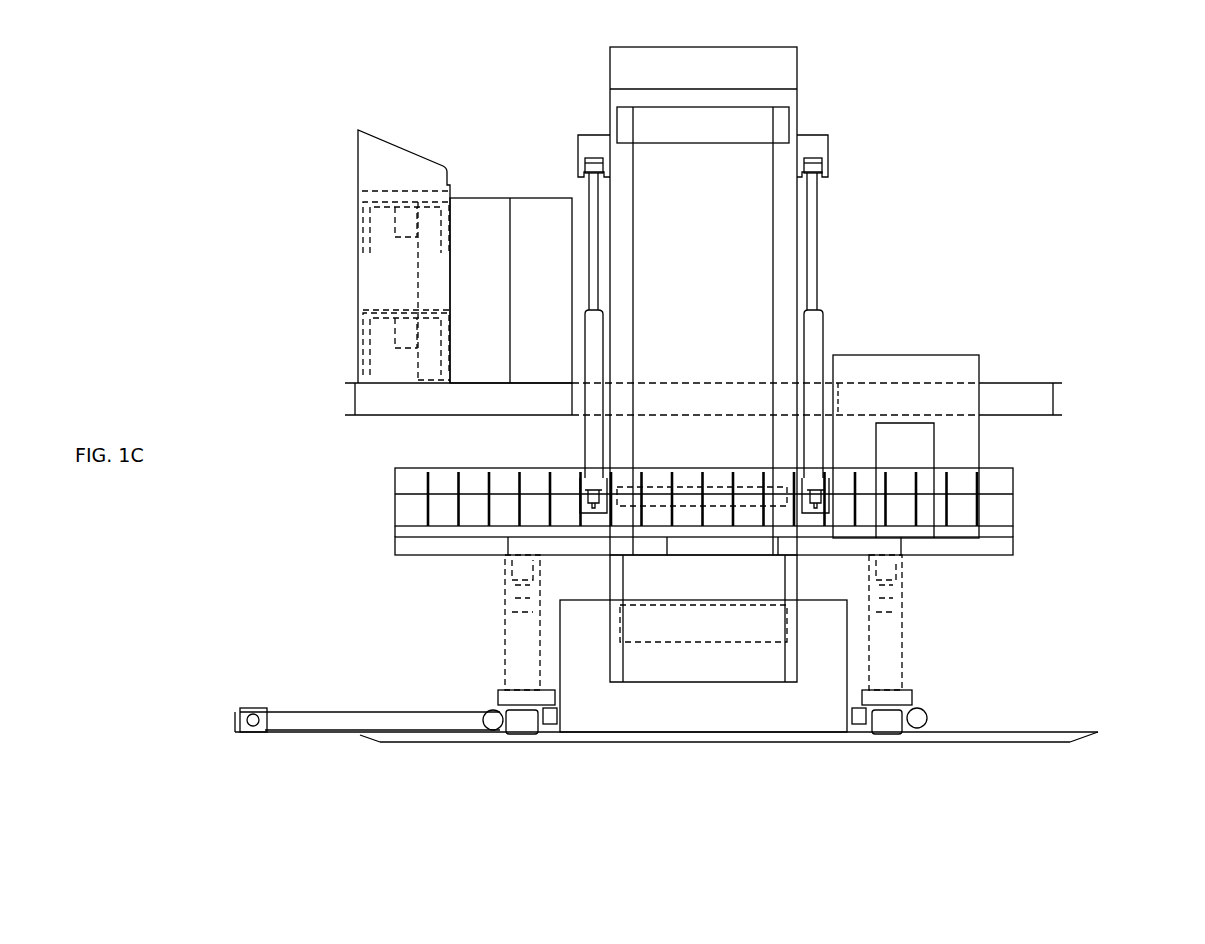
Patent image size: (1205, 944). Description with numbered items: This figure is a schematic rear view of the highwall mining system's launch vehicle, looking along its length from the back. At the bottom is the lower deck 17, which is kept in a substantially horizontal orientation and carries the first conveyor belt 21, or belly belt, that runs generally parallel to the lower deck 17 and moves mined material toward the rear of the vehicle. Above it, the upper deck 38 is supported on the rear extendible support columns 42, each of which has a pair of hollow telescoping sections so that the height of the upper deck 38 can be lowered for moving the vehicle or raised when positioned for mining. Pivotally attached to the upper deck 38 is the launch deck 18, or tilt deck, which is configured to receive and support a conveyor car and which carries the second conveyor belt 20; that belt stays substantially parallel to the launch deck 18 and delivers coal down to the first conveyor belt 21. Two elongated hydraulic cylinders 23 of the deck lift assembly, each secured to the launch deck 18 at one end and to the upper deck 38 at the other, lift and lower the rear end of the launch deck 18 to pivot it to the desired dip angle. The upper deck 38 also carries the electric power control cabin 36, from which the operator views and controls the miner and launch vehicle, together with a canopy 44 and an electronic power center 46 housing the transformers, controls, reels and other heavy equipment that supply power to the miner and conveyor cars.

The lower deck 17 is at (1013, 555).
The launch deck 18 is at (797, 108).
The second conveyor belt 20 is at (773, 203).
The first conveyor belt 21 is at (775, 628).
The hydraulic cylinder 23 is at (817, 262).
The electric power control cabin 36 is at (979, 455).
The upper deck 38 is at (353, 383).
The rear extendible support columns 42 is at (503, 637).
The canopy 44 is at (391, 142).
The electronic power center 46 is at (534, 198).